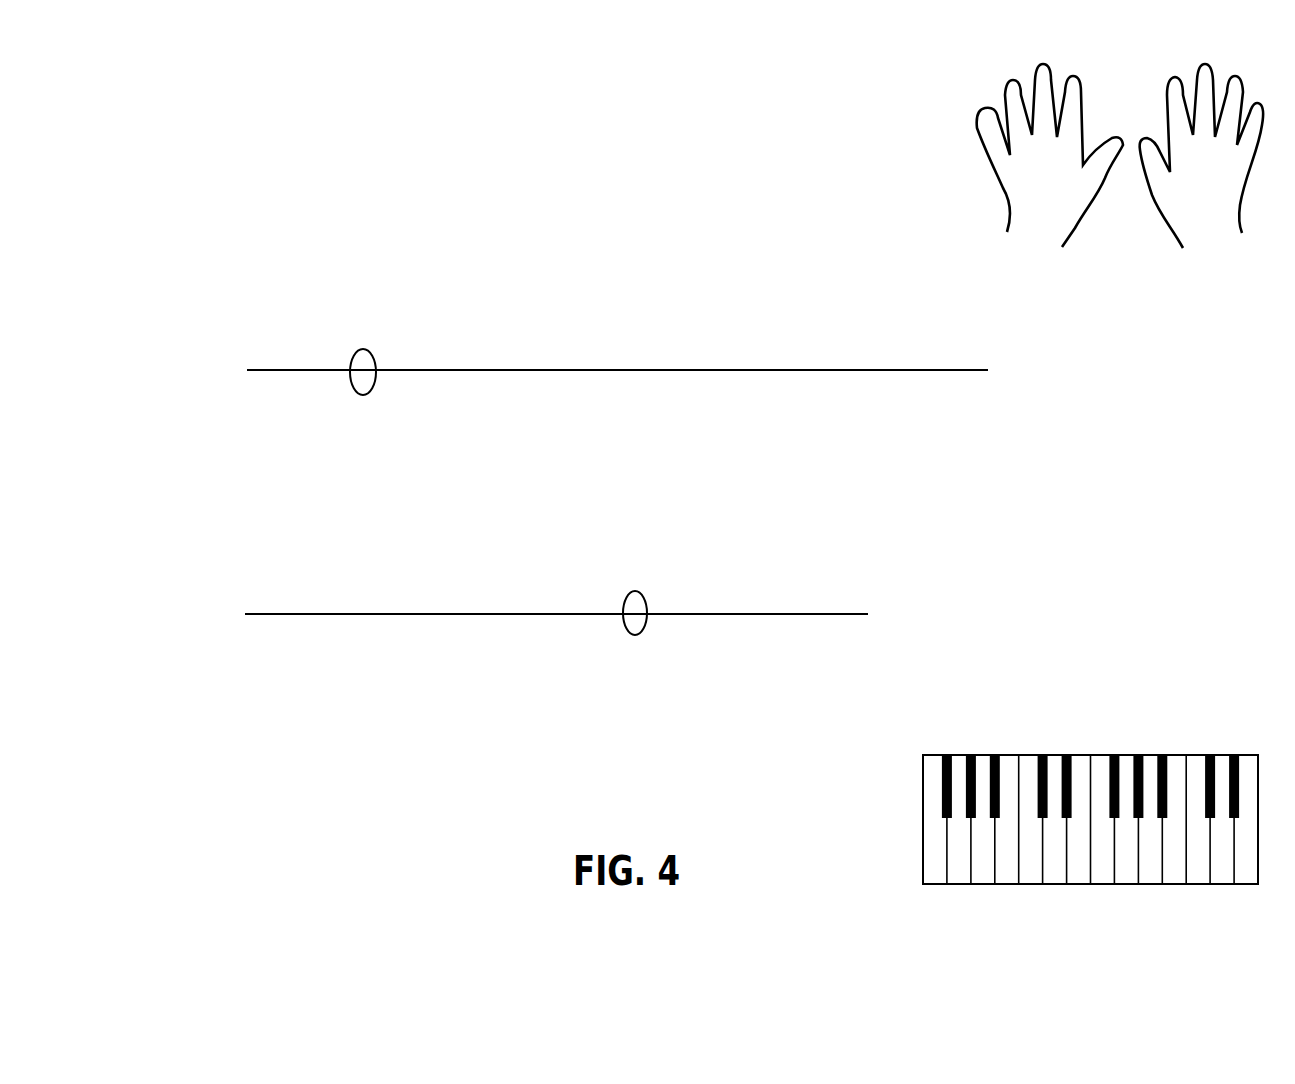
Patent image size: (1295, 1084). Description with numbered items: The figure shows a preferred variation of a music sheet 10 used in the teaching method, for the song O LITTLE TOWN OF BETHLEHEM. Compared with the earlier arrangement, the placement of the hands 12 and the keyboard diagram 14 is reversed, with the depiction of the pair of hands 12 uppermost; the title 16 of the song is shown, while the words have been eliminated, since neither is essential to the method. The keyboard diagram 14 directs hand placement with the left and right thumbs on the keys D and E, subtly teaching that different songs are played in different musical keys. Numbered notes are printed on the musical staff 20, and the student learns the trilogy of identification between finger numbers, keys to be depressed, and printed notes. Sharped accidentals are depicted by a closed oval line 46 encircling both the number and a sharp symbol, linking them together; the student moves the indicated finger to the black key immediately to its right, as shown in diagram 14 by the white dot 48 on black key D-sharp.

The music sheet 10 is at (608, 252).
The pair of hands 12 is at (958, 123).
The keyboard diagram 14 is at (1028, 791).
The title 16 is at (303, 117).
The musical staff 20 is at (1005, 370).
The closed line encirclement 46 is at (353, 389).
The white dot 48 is at (1068, 801).